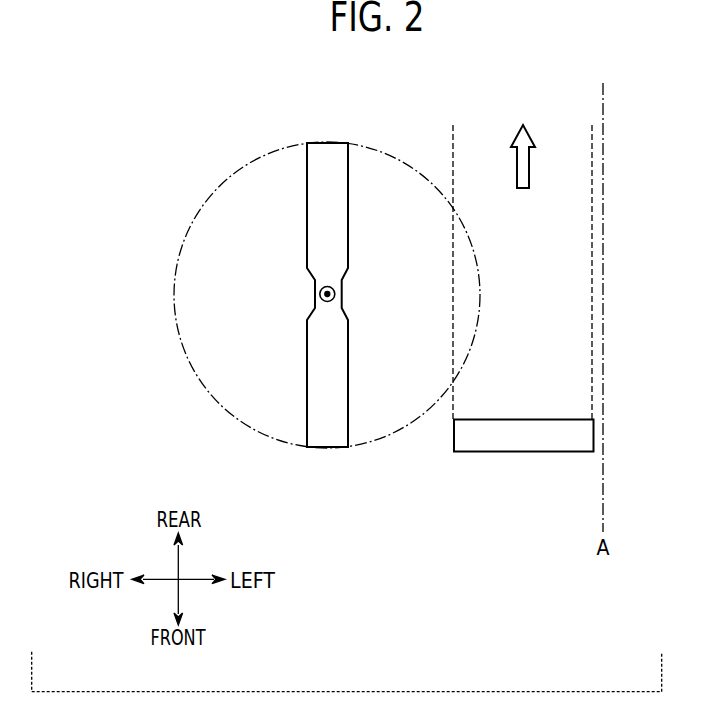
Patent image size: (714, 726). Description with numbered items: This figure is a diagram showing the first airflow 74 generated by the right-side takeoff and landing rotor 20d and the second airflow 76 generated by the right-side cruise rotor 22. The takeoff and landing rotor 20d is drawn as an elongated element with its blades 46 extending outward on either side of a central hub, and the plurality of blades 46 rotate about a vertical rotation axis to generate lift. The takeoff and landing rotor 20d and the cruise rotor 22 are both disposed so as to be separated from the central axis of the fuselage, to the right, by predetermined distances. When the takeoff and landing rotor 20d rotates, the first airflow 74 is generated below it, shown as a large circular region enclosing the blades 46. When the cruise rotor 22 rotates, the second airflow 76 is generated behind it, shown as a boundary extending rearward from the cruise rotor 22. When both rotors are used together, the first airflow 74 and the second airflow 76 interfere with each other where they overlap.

The first airflow 74 is at (208, 197).
The second airflow 76 is at (452, 143).
The blades 46 is at (307, 248).
The right-side takeoff and landing rotor 20d is at (297, 344).
The cruise rotor 22 is at (520, 443).